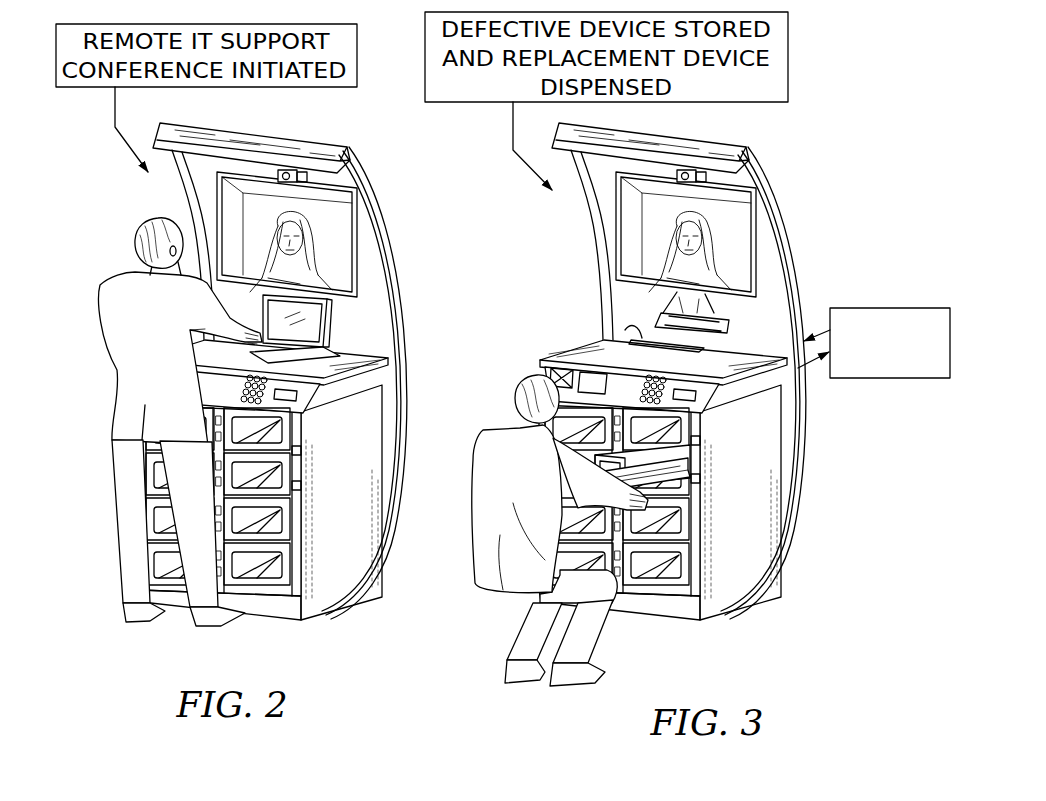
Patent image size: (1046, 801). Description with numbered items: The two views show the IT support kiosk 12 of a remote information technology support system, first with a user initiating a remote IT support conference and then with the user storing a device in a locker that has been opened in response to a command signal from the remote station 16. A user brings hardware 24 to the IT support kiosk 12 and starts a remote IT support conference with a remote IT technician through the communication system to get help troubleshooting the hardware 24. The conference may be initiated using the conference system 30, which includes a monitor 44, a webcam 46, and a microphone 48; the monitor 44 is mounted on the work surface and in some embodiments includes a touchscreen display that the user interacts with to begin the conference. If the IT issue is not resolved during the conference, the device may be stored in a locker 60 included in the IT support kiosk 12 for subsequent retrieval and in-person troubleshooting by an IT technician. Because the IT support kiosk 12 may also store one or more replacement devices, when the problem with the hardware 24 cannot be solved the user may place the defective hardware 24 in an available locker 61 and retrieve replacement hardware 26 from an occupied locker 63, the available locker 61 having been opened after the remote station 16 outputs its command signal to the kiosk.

In FIG. 2, the IT support kiosk 12 is at (108, 158).
In FIG. 3, the remote station 16 is at (890, 308).
In FIG. 2, the hardware 24 is at (341, 328).
In FIG. 3, the hardware 24 is at (668, 495).
In FIG. 2, the replacement hardware 26 is at (285, 437).
In FIG. 3, the replacement hardware 26 is at (689, 432).
In FIG. 2, the conference system 30 is at (348, 183).
In FIG. 3, the conference system 30 is at (748, 183).
In FIG. 2, the monitor 44 is at (366, 245).
In FIG. 3, the monitor 44 is at (766, 245).
In FIG. 2, the webcam 46 is at (285, 168).
In FIG. 3, the webcam 46 is at (685, 168).
In FIG. 2, the microphone 48 is at (306, 177).
In FIG. 3, the microphone 48 is at (705, 177).
In FIG. 2, the locker 60 is at (295, 528).
In FIG. 3, the locker 60 is at (695, 532).
In FIG. 2, the available locker 61 is at (295, 485).
In FIG. 3, the available locker 61 is at (695, 478).
In FIG. 2, the occupied locker 63 is at (295, 450).
In FIG. 3, the occupied locker 63 is at (695, 440).